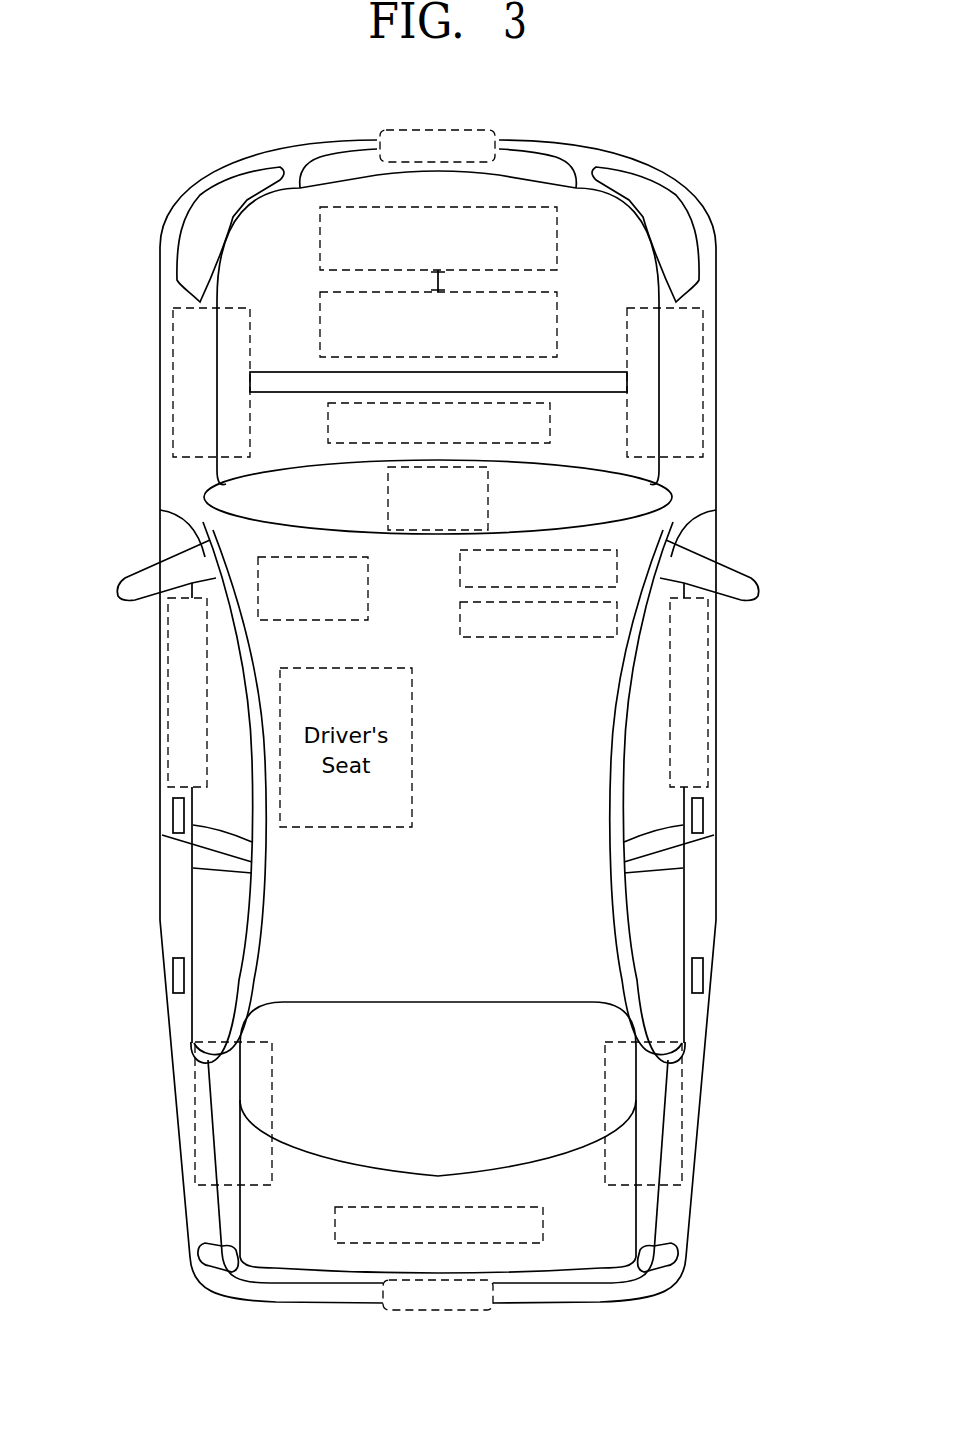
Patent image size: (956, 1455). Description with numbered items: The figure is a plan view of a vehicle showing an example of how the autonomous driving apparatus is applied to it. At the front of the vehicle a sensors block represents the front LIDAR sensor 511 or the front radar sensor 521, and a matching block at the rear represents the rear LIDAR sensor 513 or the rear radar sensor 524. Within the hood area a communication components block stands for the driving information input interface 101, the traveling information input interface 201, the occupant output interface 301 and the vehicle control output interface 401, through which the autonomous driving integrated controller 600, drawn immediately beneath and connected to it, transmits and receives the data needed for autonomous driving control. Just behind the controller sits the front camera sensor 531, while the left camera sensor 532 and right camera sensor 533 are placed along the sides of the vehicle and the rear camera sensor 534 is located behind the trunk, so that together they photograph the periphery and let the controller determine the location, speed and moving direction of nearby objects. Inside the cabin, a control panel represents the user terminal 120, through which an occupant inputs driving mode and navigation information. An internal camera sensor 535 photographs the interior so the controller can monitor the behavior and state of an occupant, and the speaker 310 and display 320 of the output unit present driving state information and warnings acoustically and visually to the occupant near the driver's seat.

The front LIDAR sensor 511 is at (445, 116).
The front radar sensor 521 is at (437, 128).
The driving information input interface 101 is at (550, 170).
The traveling information input interface 201 is at (550, 170).
The occupant output interface 301 is at (550, 170).
The vehicle control output interface 401 is at (537, 207).
The autonomous driving integrated controller 600 is at (558, 322).
The front camera sensor 531 is at (550, 423).
The user terminal 120 is at (488, 498).
The internal camera sensor 535 is at (258, 574).
The speaker 310 is at (460, 563).
The display 320 is at (460, 617).
The left camera sensor 532 is at (168, 656).
The right camera sensor 533 is at (708, 672).
The rear camera sensor 534 is at (543, 1225).
The rear LIDAR sensor 513 is at (450, 1328).
The rear radar sensor 524 is at (450, 1313).